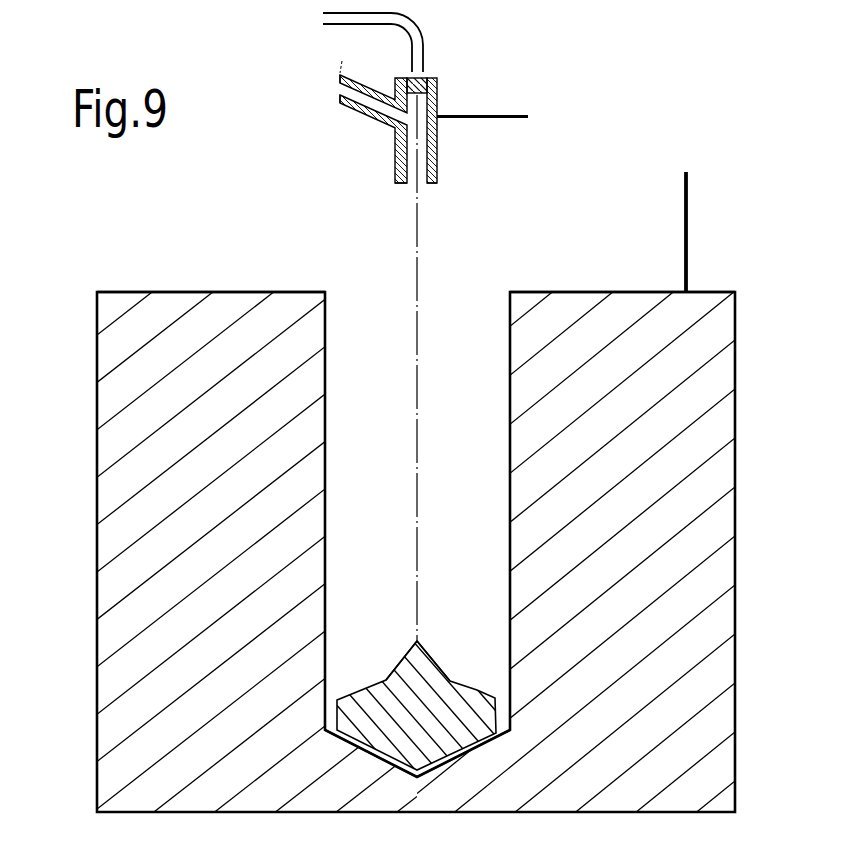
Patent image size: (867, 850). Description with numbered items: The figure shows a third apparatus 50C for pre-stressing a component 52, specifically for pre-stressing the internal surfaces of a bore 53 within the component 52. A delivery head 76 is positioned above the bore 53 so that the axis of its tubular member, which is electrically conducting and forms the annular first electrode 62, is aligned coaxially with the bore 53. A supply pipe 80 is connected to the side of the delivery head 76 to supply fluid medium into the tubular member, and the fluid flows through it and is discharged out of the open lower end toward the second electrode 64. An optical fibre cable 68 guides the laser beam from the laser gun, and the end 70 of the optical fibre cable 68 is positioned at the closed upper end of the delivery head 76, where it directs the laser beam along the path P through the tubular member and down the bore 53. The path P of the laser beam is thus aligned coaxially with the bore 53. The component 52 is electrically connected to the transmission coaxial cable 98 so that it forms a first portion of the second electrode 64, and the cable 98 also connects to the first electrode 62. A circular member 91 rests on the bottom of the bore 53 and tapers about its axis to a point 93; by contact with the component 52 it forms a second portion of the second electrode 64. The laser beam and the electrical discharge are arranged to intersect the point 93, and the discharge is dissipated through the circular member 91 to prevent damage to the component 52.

The third apparatus 50C is at (642, 155).
The component 52 is at (720, 425).
The bore 53 is at (330, 320).
The first electrode 62 is at (440, 135).
The second electrode 64 is at (727, 313).
The optical fibre cable 68 is at (353, 22).
The end of the optical fibre cable 70 is at (418, 66).
The delivery head 76 is at (439, 168).
The supply pipe 80 is at (362, 113).
The circular member 91 is at (472, 720).
The point 93 is at (418, 652).
The transmission coaxial cable 98 is at (512, 118).
The path of the laser beam P is at (418, 250).